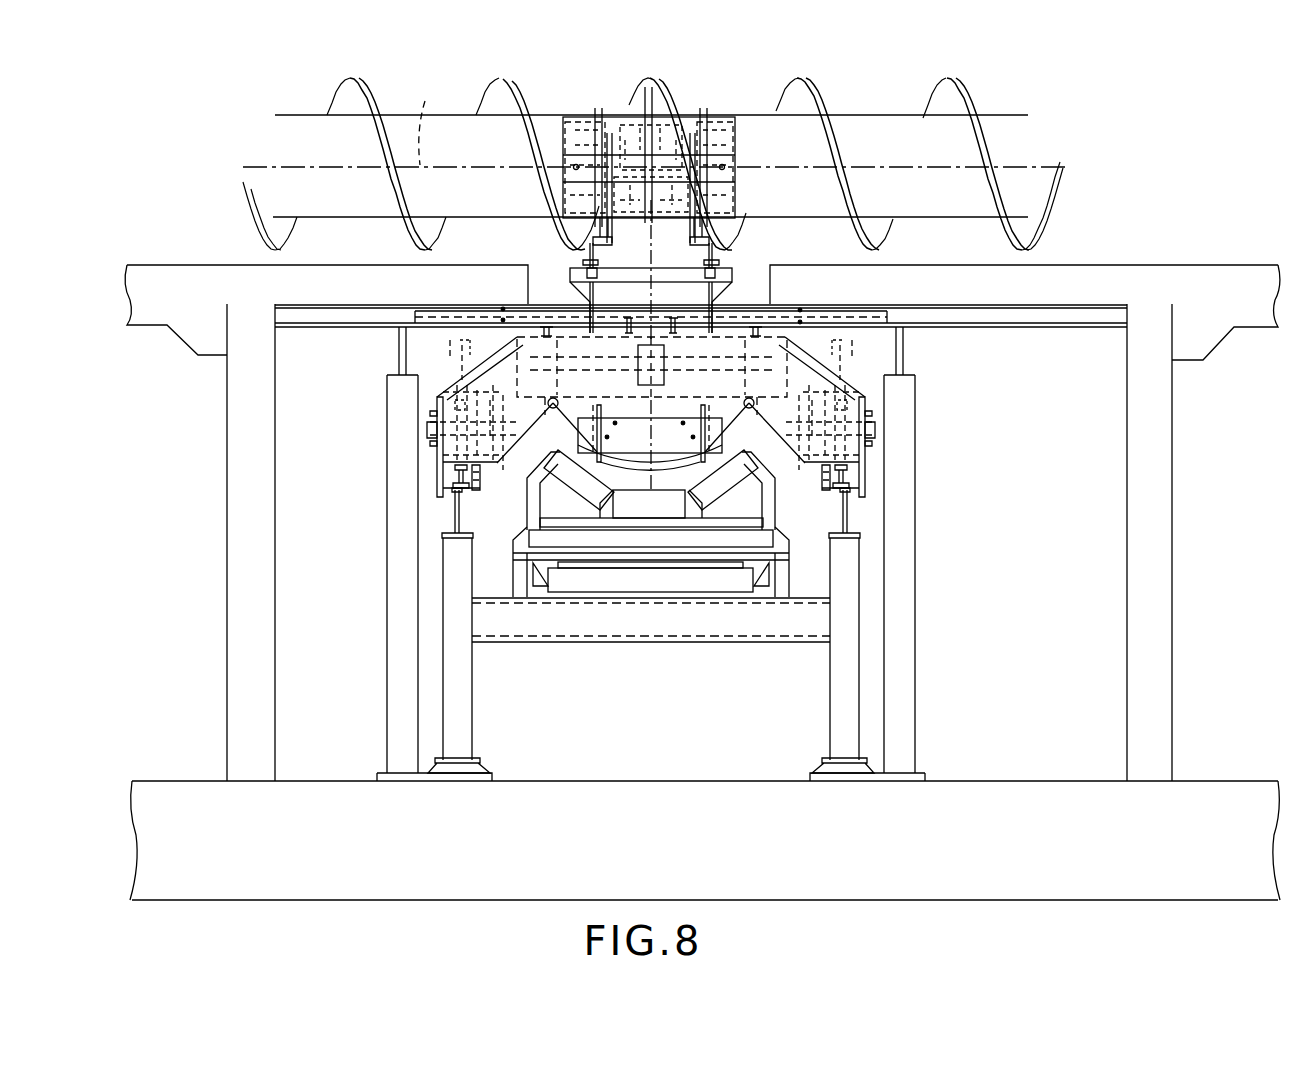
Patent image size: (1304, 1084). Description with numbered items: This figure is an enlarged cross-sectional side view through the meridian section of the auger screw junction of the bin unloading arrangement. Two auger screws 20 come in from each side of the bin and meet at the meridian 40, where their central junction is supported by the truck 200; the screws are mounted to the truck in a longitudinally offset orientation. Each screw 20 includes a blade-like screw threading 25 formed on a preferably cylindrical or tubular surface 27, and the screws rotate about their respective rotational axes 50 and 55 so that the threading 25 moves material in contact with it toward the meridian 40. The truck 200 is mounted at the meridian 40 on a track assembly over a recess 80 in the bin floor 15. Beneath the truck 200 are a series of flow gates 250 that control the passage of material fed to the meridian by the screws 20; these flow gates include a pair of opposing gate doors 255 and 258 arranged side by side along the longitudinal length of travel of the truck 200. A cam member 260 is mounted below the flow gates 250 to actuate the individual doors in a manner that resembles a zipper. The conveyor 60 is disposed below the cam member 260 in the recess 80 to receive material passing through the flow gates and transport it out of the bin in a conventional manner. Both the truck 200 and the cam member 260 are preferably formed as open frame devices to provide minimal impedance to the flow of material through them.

The floor 15 is at (1060, 295).
The auger screws 20 is at (656, 153).
The screw threading 25 is at (952, 83).
The cylindrical surface 27 is at (1003, 116).
The meridian 40 is at (652, 237).
The rotational axis 50 is at (438, 121).
The rotational axis 55 is at (982, 166).
The conveyor 60 is at (729, 500).
The recess 80 is at (1030, 522).
The truck 200 is at (732, 263).
The flow gates 250 is at (808, 334).
The gate door 255 is at (826, 320).
The gate door 258 is at (443, 314).
The cam member 260 is at (541, 343).